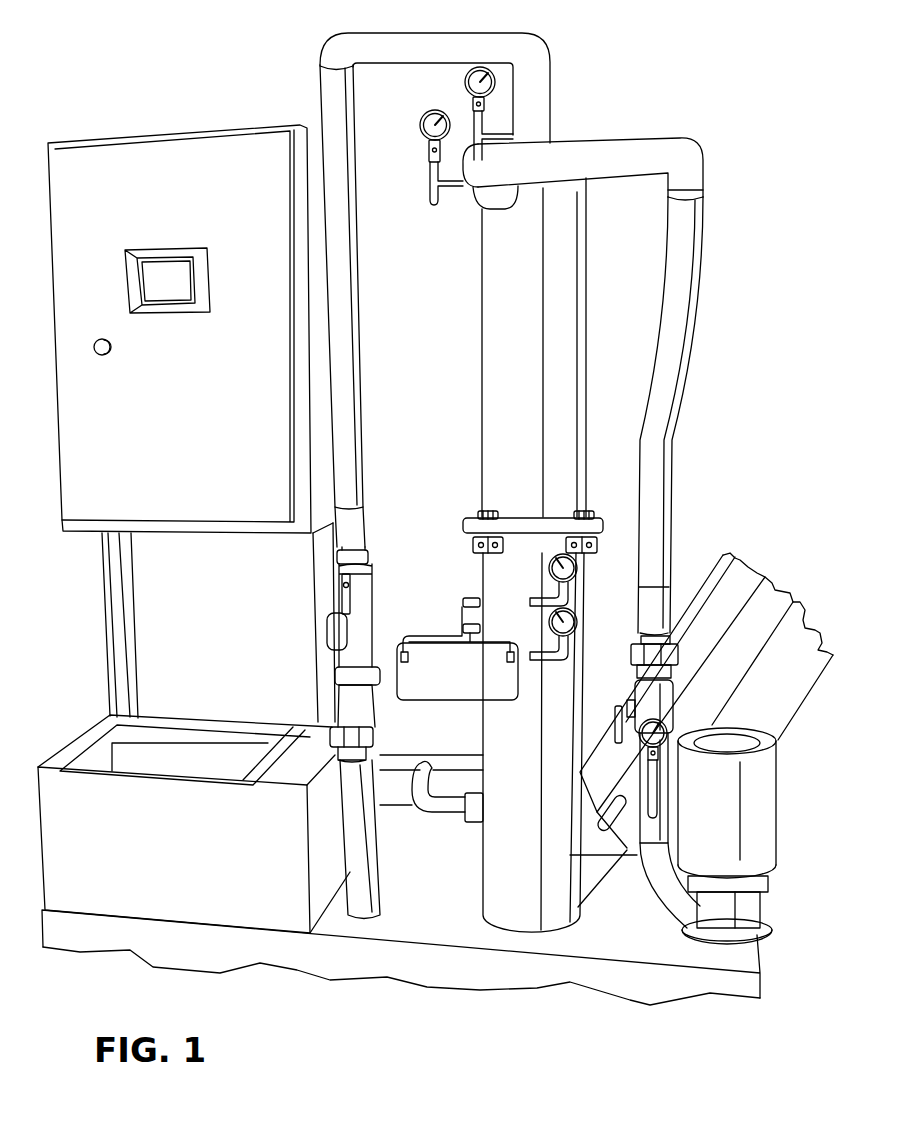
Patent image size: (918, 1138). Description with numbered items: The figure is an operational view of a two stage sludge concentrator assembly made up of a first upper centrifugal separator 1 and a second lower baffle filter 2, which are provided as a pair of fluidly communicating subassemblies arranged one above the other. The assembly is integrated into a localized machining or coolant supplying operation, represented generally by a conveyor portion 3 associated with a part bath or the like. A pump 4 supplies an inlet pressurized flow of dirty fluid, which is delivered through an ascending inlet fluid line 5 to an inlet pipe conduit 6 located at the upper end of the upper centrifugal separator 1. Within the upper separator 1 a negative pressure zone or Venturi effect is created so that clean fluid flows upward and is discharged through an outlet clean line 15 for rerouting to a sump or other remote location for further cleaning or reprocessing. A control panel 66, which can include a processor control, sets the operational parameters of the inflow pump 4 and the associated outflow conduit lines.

The first upper centrifugal separator 1 is at (523, 365).
The second lower baffle filter 2 is at (519, 757).
The conveyor portion 3 is at (728, 681).
The pump 4 is at (767, 837).
The ascending inlet fluid line 5 is at (675, 345).
The inlet pipe conduit 6 is at (620, 172).
The outlet clean line 15 is at (443, 59).
The control panel 66 is at (188, 399).